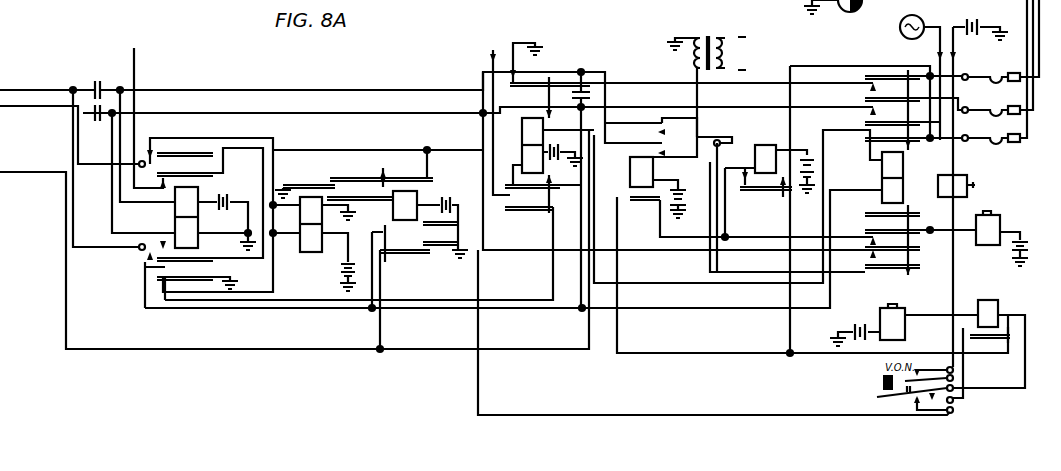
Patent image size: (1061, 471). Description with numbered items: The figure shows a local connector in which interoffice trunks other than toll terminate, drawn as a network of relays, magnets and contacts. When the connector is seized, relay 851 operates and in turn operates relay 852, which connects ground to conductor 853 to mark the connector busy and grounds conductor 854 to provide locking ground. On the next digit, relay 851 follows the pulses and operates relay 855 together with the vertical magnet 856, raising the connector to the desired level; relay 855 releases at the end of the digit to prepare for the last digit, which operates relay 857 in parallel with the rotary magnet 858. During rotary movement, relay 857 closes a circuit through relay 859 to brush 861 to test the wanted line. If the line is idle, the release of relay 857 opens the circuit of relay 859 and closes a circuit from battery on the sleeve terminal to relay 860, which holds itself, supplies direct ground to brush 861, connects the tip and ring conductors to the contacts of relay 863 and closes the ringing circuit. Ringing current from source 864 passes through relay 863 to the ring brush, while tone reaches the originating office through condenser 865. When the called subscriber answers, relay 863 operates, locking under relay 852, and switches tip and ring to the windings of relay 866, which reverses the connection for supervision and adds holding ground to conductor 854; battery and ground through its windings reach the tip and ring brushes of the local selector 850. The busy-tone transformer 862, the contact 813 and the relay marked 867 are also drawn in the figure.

The dial or switch contact 813 is at (845, 14).
The local selector 850 is at (1000, 72).
The relay 851 is at (311, 200).
The relay 852 is at (405, 192).
The conductor 853 is at (46, 174).
The conductor 854 is at (255, 309).
The relay 855 is at (985, 300).
The vertical magnet 856 is at (900, 308).
The relay 857 is at (767, 174).
The rotary magnet 858 is at (1008, 205).
The relay 859 is at (648, 171).
The relay 860 is at (900, 165).
The brush 861 is at (969, 142).
The busy tone transformer 862 is at (704, 38).
The relay 863 is at (533, 170).
The source 864 is at (921, 17).
The condenser 865 is at (600, 94).
The relay 866 is at (181, 208).
The relay RLS 867 is at (975, 185).